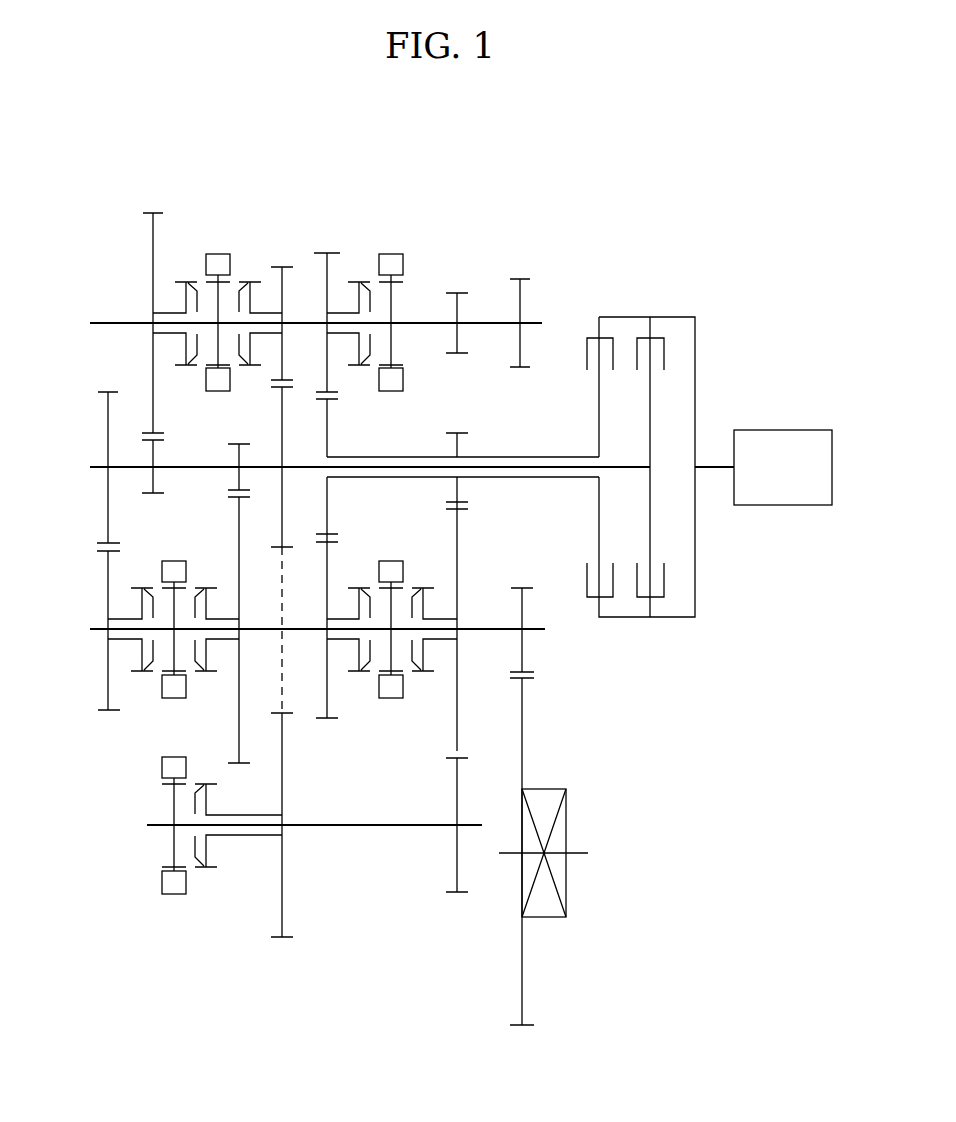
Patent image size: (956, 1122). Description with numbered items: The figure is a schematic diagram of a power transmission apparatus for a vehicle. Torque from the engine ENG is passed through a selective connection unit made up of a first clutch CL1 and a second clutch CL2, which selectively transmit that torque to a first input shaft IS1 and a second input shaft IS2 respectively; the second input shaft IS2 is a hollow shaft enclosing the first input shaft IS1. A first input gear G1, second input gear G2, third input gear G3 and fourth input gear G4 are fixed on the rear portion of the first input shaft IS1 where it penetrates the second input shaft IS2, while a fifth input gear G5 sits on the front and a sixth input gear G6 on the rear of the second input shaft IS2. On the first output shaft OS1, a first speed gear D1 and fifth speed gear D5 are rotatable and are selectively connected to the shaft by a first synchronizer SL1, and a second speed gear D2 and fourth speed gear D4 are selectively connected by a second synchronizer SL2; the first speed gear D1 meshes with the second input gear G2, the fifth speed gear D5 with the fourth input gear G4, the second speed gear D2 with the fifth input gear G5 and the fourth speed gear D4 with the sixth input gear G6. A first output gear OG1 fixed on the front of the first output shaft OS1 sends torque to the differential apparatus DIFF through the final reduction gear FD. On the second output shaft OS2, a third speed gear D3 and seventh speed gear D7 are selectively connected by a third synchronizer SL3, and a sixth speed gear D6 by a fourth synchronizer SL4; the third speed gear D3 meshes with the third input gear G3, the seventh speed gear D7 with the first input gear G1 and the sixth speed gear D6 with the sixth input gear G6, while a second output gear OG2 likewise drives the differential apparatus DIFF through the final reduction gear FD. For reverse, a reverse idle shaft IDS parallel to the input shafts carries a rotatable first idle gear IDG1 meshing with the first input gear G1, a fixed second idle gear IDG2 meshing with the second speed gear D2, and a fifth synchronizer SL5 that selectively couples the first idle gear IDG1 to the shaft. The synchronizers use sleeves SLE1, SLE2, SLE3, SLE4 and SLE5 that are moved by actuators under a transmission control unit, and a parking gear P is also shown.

The second output shaft OS2 is at (96, 322).
The first output shaft OS1 is at (102, 631).
The first input shaft IS1 is at (571, 468).
The second input shaft IS2 is at (511, 478).
The reverse idle shaft IDS is at (357, 827).
The first speed gear D1 is at (238, 530).
The second speed gear D2 is at (458, 553).
The third speed gear D3 is at (152, 253).
The fourth speed gear D4 is at (328, 560).
The fifth speed gear D5 is at (107, 585).
The sixth speed gear D6 is at (326, 262).
The seventh speed gear D7 is at (270, 277).
The first input gear G1 is at (283, 452).
The second input gear G2 is at (237, 457).
The third input gear G3 is at (157, 455).
The fourth input gear G4 is at (107, 426).
The fifth input gear G5 is at (460, 442).
The sixth input gear G6 is at (329, 431).
The parking gear P is at (464, 300).
The first output gear OG1 is at (523, 612).
The second output gear OG2 is at (521, 300).
The first idle gear IDG1 is at (281, 900).
The second idle gear IDG2 is at (456, 866).
The first synchronizer SL1 is at (130, 718).
The second synchronizer SL2 is at (352, 718).
The third synchronizer SL3 is at (195, 228).
The fourth synchronizer SL4 is at (359, 232).
The fifth synchronizer SL5 is at (149, 909).
The sleeve SLE1 is at (173, 698).
The sleeve SLE2 is at (391, 698).
The sleeve SLE3 is at (217, 254).
The sleeve SLE4 is at (391, 254).
The sleeve SLE5 is at (174, 894).
The first clutch CL1 is at (680, 341).
The second clutch CL2 is at (613, 318).
The engine ENG is at (783, 467).
The final reduction gear FD is at (523, 733).
The differential apparatus DIFF is at (567, 815).